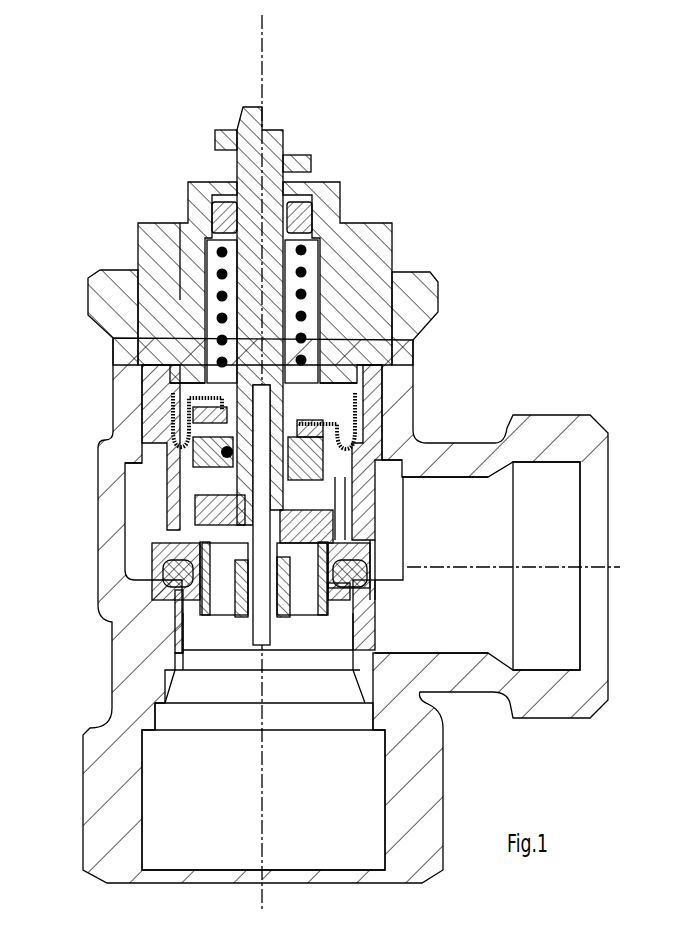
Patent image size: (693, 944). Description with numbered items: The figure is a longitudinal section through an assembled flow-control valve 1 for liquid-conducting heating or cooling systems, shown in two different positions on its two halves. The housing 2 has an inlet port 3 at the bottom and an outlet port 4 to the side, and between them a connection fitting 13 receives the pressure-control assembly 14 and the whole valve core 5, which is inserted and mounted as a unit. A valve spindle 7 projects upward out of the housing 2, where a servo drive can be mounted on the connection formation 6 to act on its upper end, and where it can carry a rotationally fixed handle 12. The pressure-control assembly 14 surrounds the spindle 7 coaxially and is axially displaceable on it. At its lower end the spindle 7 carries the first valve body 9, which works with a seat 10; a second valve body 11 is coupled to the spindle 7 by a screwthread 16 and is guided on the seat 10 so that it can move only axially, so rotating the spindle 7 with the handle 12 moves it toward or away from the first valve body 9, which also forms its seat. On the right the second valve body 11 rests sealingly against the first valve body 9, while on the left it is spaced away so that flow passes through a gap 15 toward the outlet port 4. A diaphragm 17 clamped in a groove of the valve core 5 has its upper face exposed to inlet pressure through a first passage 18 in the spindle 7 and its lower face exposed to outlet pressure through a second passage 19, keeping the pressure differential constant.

The flow-control valve 1 is at (486, 266).
The housing 2 is at (420, 778).
The inlet port 3 is at (345, 826).
The outlet port 4 is at (552, 478).
The valve core 5 is at (386, 202).
The connection formation 6 is at (103, 288).
The valve spindle 7 is at (241, 126).
The first valve body 9 is at (173, 535).
The seat 10 is at (158, 572).
The second valve body 11 is at (180, 635).
The handle 12 is at (302, 155).
The connection fitting 13 is at (403, 365).
The pressure-control assembly 14 is at (162, 443).
The gap 15 is at (150, 563).
The screwthread 16 is at (178, 655).
The diaphragm 17 is at (300, 446).
The first passage 18 is at (205, 385).
The second passage 19 is at (175, 487).